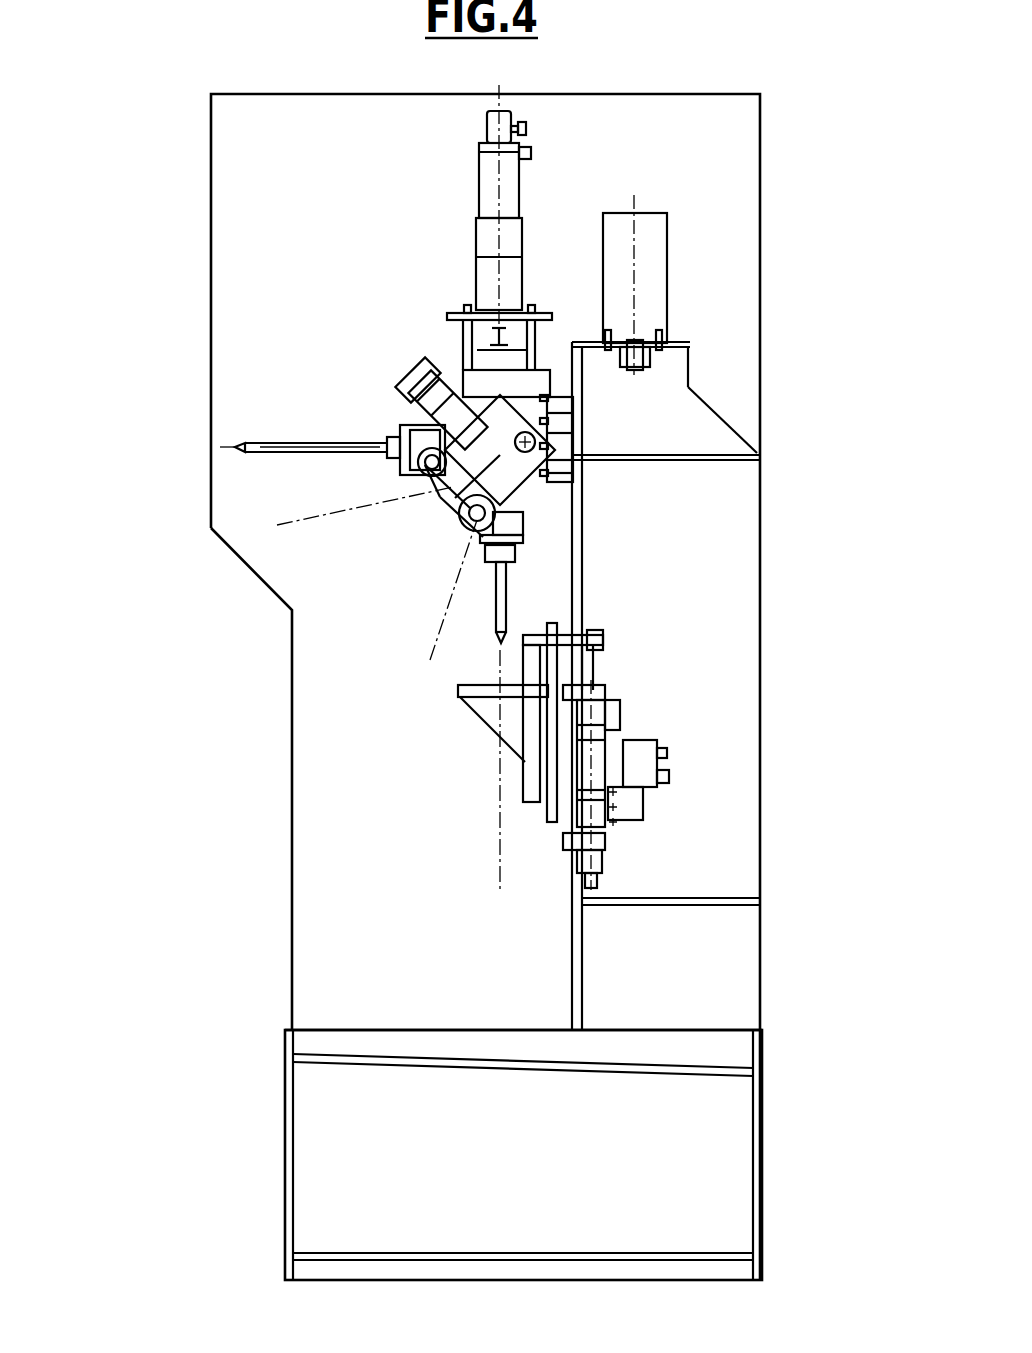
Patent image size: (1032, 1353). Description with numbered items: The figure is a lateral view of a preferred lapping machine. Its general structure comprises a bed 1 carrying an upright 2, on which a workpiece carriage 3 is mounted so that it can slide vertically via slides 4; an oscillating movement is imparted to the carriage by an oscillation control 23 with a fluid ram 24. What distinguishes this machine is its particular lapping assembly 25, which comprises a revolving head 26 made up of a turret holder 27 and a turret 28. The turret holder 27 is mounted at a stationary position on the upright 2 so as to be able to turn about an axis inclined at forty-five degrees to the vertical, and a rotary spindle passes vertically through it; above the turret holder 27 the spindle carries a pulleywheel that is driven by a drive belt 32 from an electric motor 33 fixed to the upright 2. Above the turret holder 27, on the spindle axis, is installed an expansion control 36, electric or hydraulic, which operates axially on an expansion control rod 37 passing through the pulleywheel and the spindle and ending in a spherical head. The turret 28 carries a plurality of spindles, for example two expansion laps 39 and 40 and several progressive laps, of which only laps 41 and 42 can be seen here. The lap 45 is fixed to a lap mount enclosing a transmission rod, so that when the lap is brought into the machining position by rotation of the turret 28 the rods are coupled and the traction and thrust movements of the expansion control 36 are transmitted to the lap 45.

The bed 1 is at (765, 1165).
The upright 2 is at (765, 677).
The workpiece carriage 3 is at (485, 712).
The slides 4 is at (563, 772).
The oscillation control 23 is at (488, 757).
The fluid ram 24 is at (598, 705).
The lapping assembly 25 is at (645, 205).
The revolving head 26 is at (448, 510).
The turret holder 27 is at (413, 392).
The turret 28 is at (450, 512).
The drive belt 32 is at (547, 352).
The electric motor 33 is at (645, 275).
The expansion control 36 is at (490, 282).
The expansion control rod 37 is at (462, 327).
The expansion lap 39 is at (522, 520).
The expansion lap 40 is at (387, 437).
The progressive lap 41 is at (457, 517).
The progressive lap 42 is at (445, 476).
The lap 45 is at (508, 595).